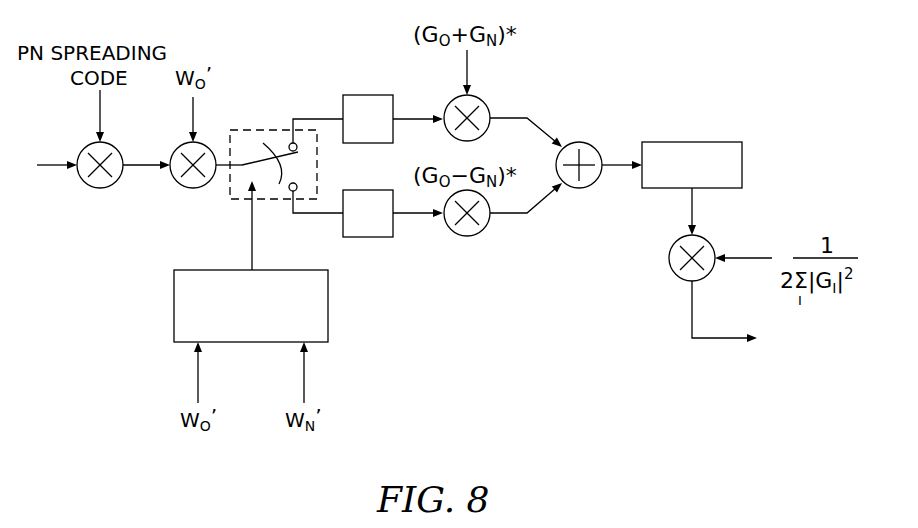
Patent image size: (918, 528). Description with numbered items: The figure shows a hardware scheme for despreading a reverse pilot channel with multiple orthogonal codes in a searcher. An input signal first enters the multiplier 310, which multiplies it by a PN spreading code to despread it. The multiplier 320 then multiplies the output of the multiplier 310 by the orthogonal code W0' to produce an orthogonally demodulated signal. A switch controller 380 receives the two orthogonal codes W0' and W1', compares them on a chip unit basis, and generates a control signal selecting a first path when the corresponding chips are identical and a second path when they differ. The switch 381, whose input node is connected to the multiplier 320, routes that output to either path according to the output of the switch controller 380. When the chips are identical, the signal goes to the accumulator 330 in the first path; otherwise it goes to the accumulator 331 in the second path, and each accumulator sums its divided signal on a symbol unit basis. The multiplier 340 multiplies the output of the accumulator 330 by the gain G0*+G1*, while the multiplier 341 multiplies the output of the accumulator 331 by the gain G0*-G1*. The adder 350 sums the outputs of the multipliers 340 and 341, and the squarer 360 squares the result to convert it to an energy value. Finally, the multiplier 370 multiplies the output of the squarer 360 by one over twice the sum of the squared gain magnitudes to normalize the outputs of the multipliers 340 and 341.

The multiplier 310 is at (83, 148).
The multiplier 320 is at (176, 148).
The accumulator 330 is at (363, 95).
The accumulator 331 is at (363, 237).
The multiplier 340 is at (484, 103).
The multiplier 341 is at (484, 228).
The adder 350 is at (587, 142).
The squarer 360 is at (708, 142).
The multiplier 370 is at (672, 266).
The switch controller 380 is at (174, 296).
The switch 381 is at (250, 130).